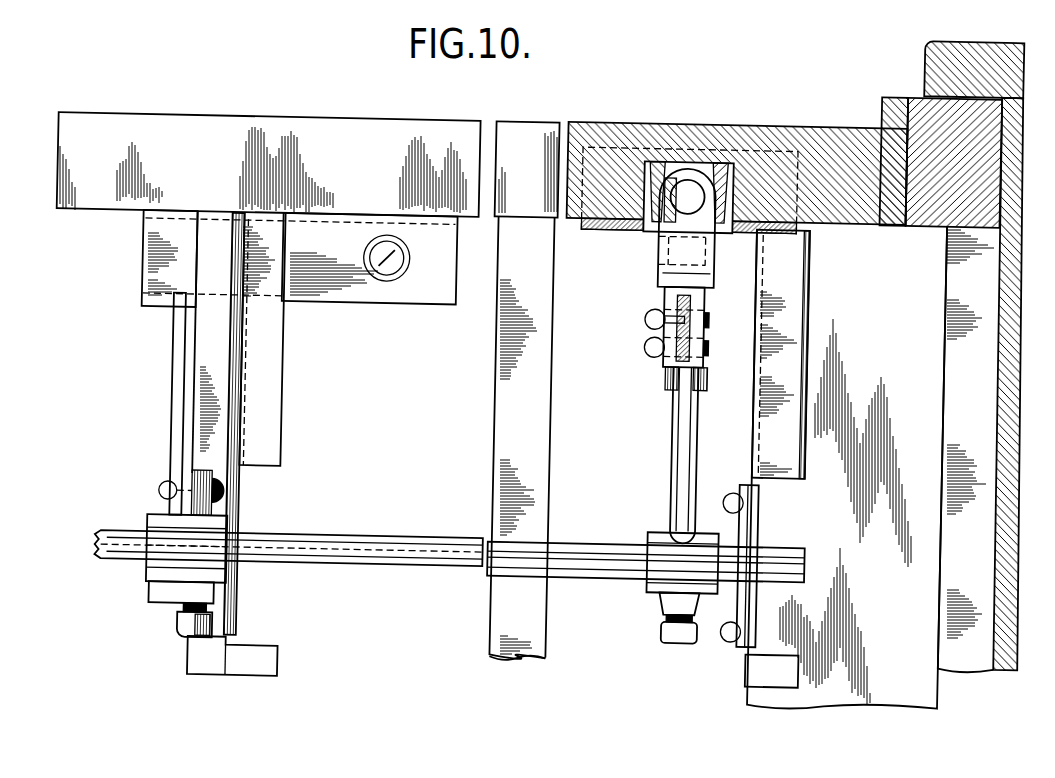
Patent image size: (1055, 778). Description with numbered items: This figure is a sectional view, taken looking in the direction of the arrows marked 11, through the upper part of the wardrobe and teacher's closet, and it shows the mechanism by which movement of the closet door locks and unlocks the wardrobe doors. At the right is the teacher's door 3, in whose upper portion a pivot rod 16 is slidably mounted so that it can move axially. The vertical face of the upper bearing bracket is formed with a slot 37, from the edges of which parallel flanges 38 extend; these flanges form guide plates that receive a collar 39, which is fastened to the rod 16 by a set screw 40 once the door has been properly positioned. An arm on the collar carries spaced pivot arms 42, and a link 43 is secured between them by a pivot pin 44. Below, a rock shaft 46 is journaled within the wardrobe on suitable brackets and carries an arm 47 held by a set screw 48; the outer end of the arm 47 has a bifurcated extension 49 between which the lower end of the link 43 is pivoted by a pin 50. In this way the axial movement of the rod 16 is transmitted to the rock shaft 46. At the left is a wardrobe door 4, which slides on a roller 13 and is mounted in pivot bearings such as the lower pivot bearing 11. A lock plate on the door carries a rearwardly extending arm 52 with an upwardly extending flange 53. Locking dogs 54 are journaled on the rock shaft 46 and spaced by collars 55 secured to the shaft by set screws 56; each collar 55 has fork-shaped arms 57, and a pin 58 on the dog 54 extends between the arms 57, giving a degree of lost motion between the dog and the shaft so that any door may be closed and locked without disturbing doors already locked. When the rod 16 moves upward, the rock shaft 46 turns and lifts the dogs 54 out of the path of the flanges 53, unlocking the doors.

The teacher's door 3 is at (833, 121).
The wardrobe door 4 is at (342, 122).
The lower pivot bearing 11 is at (74, 718).
The roller 13 is at (409, 260).
The pivot rod 16 is at (684, 191).
The slot 37 is at (715, 226).
The parallel flanges 38 is at (728, 181).
The collar 39 is at (669, 214).
The set screw 40 is at (703, 228).
The pivot arms 42 is at (698, 302).
The link 43 is at (672, 337).
The pivot pin 44 is at (650, 316).
The rock shaft 46 is at (378, 543).
The arm 47 is at (683, 439).
The set screw 48 is at (685, 632).
The bifurcated extension 49 is at (704, 356).
The pin 50 is at (651, 350).
The rearwardly extending arm 52 is at (142, 266).
The upwardly extending flange 53 is at (163, 310).
The locking dog 54 is at (178, 389).
The collar 55 is at (162, 583).
The set screw 56 is at (190, 629).
The fork-shaped arms 57 is at (202, 493).
The pin 58 is at (192, 497).